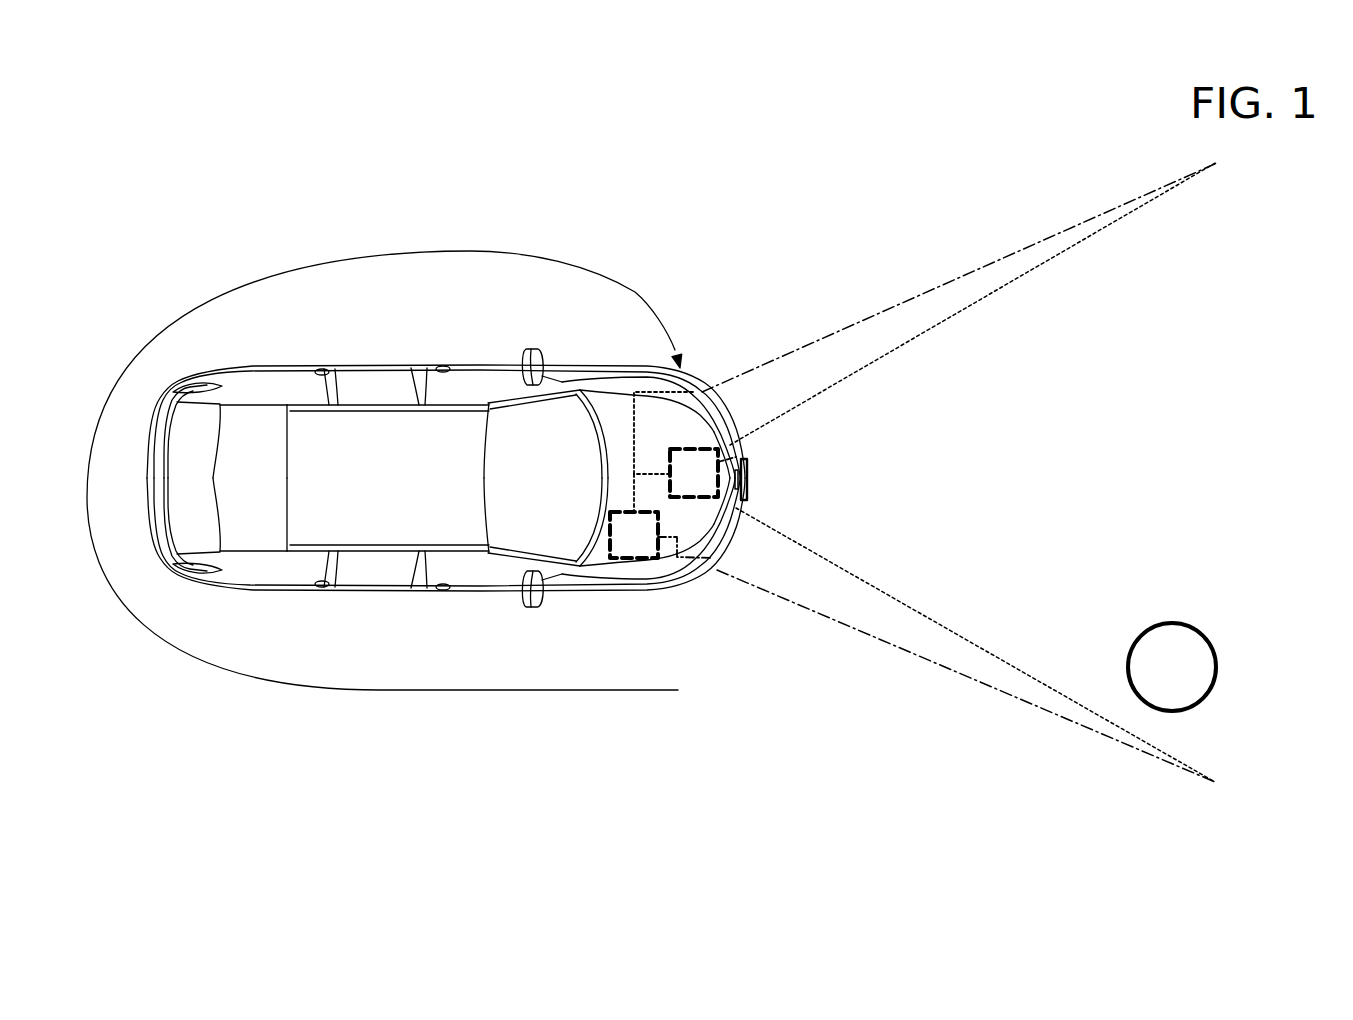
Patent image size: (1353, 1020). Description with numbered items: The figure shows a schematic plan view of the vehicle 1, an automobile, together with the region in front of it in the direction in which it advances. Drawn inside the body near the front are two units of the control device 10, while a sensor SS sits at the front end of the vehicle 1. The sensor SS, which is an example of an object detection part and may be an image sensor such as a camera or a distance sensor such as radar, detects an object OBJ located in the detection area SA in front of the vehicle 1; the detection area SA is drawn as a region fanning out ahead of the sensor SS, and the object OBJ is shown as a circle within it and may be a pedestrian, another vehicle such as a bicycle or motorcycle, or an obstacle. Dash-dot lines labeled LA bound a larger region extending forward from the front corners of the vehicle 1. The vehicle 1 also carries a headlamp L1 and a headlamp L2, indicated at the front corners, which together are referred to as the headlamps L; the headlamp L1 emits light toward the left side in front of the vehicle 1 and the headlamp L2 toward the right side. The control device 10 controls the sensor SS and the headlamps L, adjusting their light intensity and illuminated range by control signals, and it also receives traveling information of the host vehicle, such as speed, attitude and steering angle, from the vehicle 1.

The vehicle 1 is at (417, 352).
The control device 10 is at (628, 560).
The sensor SS is at (732, 460).
The sensing range boundary (dash-dot) LA is at (832, 357).
The detection area SA is at (1053, 350).
The object OBJ is at (1197, 630).
The headlamp L1 is at (398, 479).
The headlamp L2 is at (710, 583).
The headlamps L is at (428, 503).